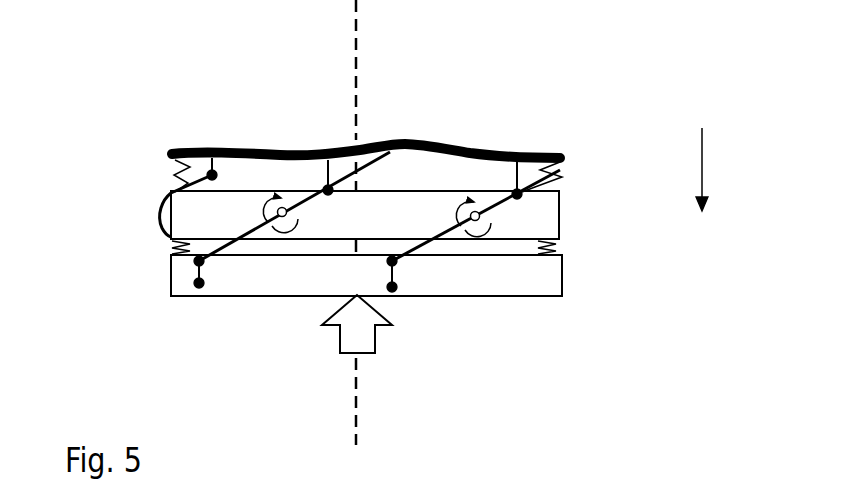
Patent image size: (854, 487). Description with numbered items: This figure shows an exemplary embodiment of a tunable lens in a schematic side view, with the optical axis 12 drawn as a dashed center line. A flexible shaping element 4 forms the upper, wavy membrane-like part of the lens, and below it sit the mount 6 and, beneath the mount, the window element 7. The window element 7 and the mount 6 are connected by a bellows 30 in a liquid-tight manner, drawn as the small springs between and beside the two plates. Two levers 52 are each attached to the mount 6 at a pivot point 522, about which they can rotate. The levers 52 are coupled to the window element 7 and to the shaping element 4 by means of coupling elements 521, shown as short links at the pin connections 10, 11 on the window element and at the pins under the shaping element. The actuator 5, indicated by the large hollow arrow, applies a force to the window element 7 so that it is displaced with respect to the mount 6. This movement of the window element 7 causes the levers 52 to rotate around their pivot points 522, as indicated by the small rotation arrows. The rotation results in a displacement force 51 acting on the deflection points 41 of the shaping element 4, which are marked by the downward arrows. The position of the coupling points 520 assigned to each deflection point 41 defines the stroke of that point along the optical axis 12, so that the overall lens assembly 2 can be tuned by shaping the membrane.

The cover assembly 2 is at (460, 178).
The shaping element 4 is at (237, 148).
The actuator 5 is at (362, 330).
The mount 6 is at (540, 228).
The window element 7 is at (538, 282).
The left pivot pin pair 10 is at (212, 270).
The right pivot pin pair 11 is at (392, 290).
The optical axis 12 is at (355, 88).
The bellows 30 is at (173, 155).
The deflection points 41 is at (322, 136).
The displacement force 51 is at (718, 169).
The lever 52 is at (163, 200).
The coupling positions 520 is at (522, 197).
The coupling elements 521 is at (275, 155).
The pivot point 522 is at (283, 222).